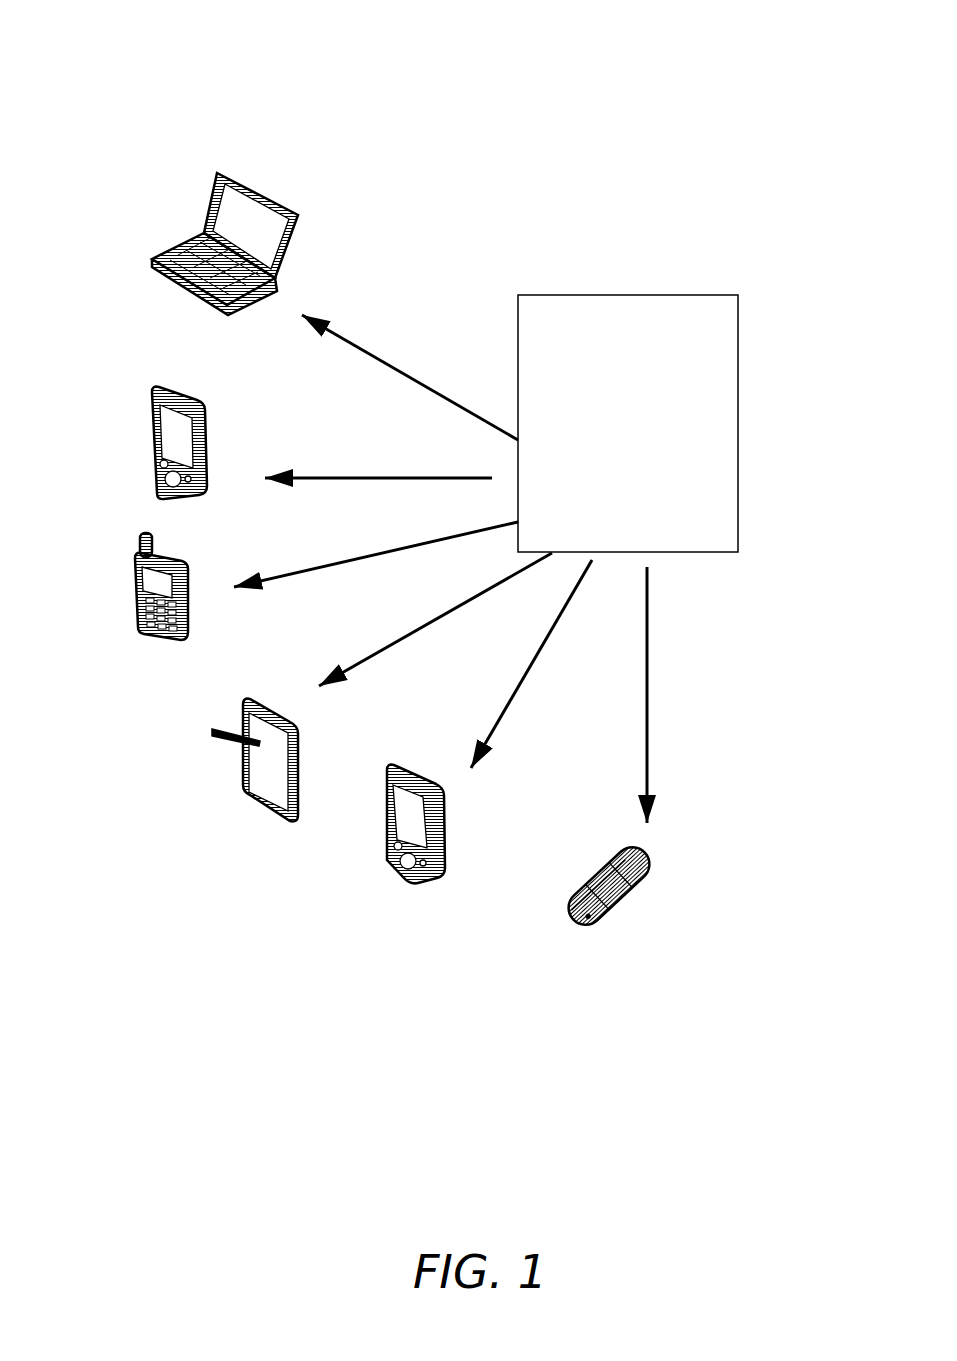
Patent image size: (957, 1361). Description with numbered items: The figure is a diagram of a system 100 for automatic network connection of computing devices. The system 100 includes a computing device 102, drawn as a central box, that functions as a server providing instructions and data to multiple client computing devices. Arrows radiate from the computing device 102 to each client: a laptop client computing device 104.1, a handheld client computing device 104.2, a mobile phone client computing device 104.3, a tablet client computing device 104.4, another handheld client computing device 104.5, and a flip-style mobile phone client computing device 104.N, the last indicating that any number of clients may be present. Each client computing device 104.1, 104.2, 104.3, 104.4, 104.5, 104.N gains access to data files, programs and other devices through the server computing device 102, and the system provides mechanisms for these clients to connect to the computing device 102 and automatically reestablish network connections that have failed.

The system 100 is at (738, 94).
The computing device 102 is at (606, 435).
The client computing device 104.1 is at (183, 244).
The client computing device 104.2 is at (129, 443).
The client computing device 104.3 is at (119, 586).
The client computing device 104.4 is at (221, 760).
The client computing device 104.5 is at (394, 848).
The client computing device 104.N is at (608, 913).